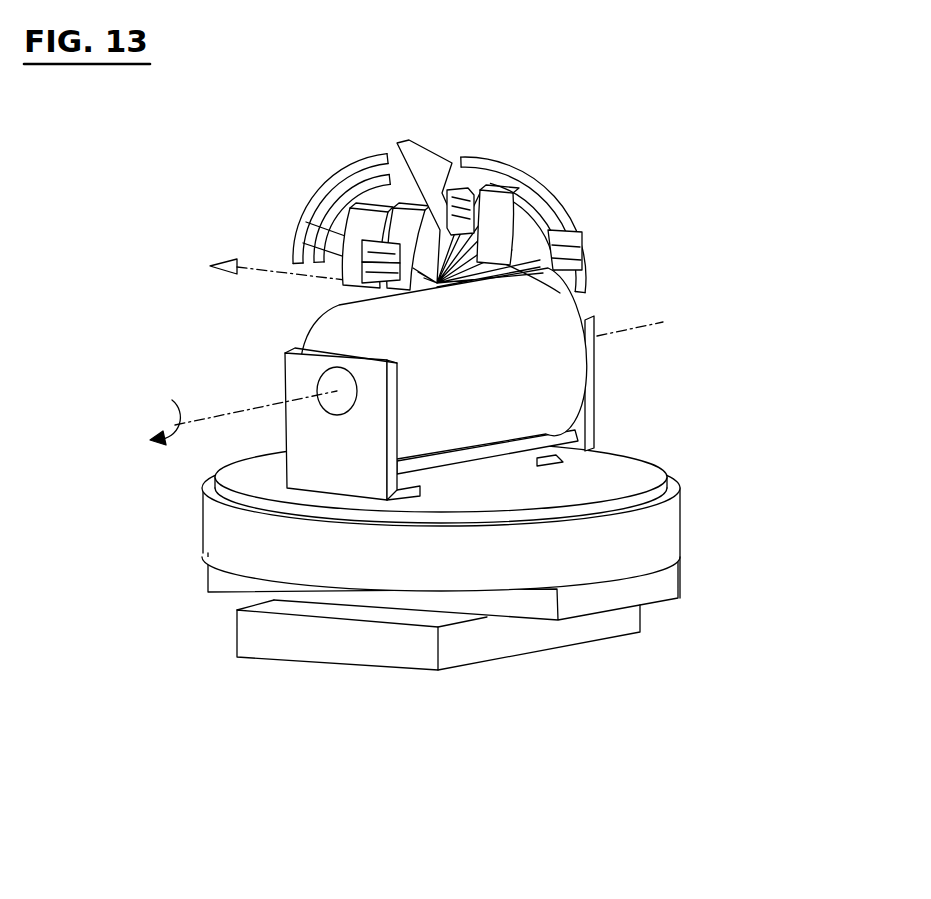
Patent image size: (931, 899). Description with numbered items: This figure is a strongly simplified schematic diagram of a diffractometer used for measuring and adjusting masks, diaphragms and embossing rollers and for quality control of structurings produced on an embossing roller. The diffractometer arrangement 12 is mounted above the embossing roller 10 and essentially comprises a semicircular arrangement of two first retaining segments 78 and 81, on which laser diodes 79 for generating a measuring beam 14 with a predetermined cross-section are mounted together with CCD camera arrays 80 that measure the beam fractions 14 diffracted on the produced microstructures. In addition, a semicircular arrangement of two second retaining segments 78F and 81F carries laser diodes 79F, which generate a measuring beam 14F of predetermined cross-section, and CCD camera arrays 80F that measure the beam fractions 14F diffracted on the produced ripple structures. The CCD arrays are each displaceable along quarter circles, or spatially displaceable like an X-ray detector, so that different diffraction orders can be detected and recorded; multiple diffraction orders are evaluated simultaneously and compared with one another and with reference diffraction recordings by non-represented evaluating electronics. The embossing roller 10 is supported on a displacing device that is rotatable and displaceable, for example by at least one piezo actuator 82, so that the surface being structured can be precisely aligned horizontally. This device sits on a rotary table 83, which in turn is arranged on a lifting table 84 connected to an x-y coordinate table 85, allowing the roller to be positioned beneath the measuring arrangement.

The embossing roller 10 is at (560, 343).
The diffractometer arrangement 12 is at (546, 718).
The measuring beam 14 is at (438, 193).
The measuring beam 14F is at (410, 213).
The first retaining segment 78 is at (400, 150).
The second retaining segment 78F is at (522, 172).
The laser diodes 79 is at (368, 260).
The laser diodes 79F is at (575, 247).
The CCD camera arrays 80 is at (452, 163).
The CCD camera arrays 80F is at (362, 242).
The first retaining segment 81 is at (505, 238).
The second retaining segment 81F is at (360, 208).
The piezo actuator 82 is at (583, 455).
The rotary table 83 is at (633, 477).
The lifting table 84 is at (650, 532).
The x-y coordinate table 85 is at (585, 627).